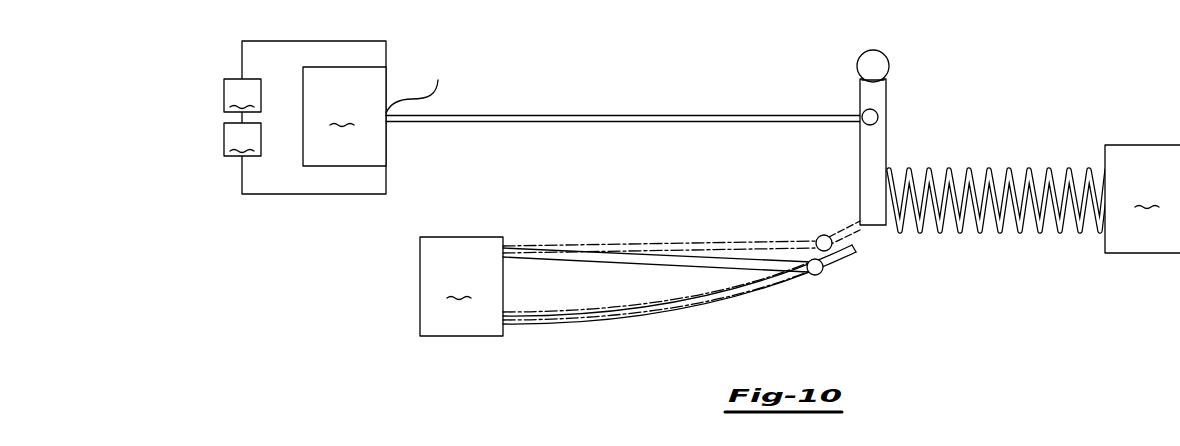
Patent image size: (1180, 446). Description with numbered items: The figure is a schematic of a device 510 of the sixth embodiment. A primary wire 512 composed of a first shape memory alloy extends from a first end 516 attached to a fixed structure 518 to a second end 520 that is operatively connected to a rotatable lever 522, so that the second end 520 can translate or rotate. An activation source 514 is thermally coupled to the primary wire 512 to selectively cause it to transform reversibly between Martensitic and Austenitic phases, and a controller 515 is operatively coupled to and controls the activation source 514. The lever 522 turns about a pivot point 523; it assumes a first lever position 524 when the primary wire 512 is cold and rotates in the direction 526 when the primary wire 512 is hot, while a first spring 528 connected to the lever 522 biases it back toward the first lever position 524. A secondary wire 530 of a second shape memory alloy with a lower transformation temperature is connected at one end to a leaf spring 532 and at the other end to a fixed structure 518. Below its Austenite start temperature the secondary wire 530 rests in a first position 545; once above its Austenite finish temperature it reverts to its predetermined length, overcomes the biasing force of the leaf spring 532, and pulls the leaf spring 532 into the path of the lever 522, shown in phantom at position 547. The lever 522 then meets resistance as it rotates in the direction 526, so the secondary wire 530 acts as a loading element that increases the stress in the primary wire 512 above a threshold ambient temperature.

The device 510 is at (988, 73).
The primary wire 512 is at (626, 113).
The activation source 514 is at (242, 95).
The controller 515 is at (242, 139).
The first end 516 is at (417, 86).
The fixed structure 518 is at (711, 188).
The second end 520 is at (863, 111).
The rotatable lever 522 is at (887, 59).
The pivot point 523 is at (872, 68).
The first lever position 524 is at (886, 105).
The direction 526 is at (847, 210).
The first spring 528 is at (1003, 233).
The secondary wire 530 is at (640, 257).
The leaf spring 532 is at (600, 328).
The first position 545 is at (586, 259).
The phantom position 547 is at (716, 240).